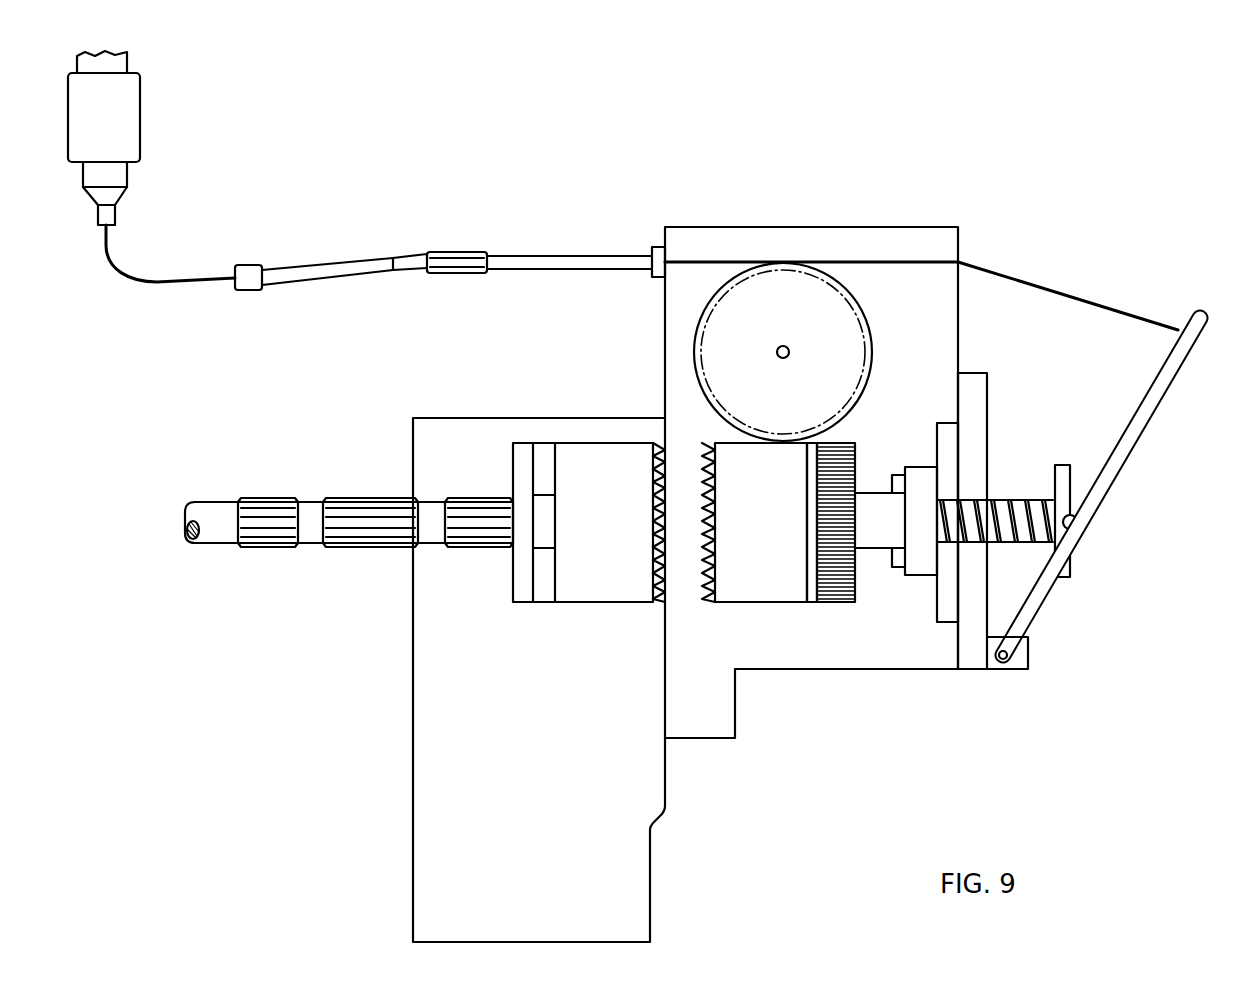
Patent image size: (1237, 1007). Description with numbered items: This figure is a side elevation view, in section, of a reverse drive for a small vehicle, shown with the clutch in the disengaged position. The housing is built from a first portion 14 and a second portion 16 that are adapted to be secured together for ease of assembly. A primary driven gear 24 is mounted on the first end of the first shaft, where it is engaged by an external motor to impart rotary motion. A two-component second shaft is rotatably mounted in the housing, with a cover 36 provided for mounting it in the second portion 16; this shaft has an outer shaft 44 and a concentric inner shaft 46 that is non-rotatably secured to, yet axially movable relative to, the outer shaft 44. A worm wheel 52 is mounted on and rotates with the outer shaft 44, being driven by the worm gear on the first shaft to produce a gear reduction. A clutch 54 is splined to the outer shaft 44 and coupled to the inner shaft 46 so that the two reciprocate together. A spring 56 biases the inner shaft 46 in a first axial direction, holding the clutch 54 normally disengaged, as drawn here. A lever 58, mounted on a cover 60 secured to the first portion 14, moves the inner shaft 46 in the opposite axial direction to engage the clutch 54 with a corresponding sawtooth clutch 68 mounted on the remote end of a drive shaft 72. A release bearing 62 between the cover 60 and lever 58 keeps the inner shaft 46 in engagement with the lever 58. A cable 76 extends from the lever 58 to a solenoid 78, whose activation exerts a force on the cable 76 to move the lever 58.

The first portion 14 is at (882, 227).
The second portion 16 is at (650, 860).
The primary driven gear 24 is at (780, 283).
The cover 36 is at (815, 592).
The outer shaft 44 is at (868, 540).
The inner shaft 46 is at (925, 517).
The worm wheel 52 is at (840, 600).
The clutch 54 is at (763, 580).
The spring 56 is at (1023, 502).
The lever 58 is at (1157, 387).
The cover 60 is at (972, 660).
The release bearing 62 is at (1063, 472).
The sawtooth clutch 68 is at (580, 462).
The drive shaft 72 is at (268, 498).
The cable 76 is at (173, 282).
The solenoid 78 is at (140, 108).